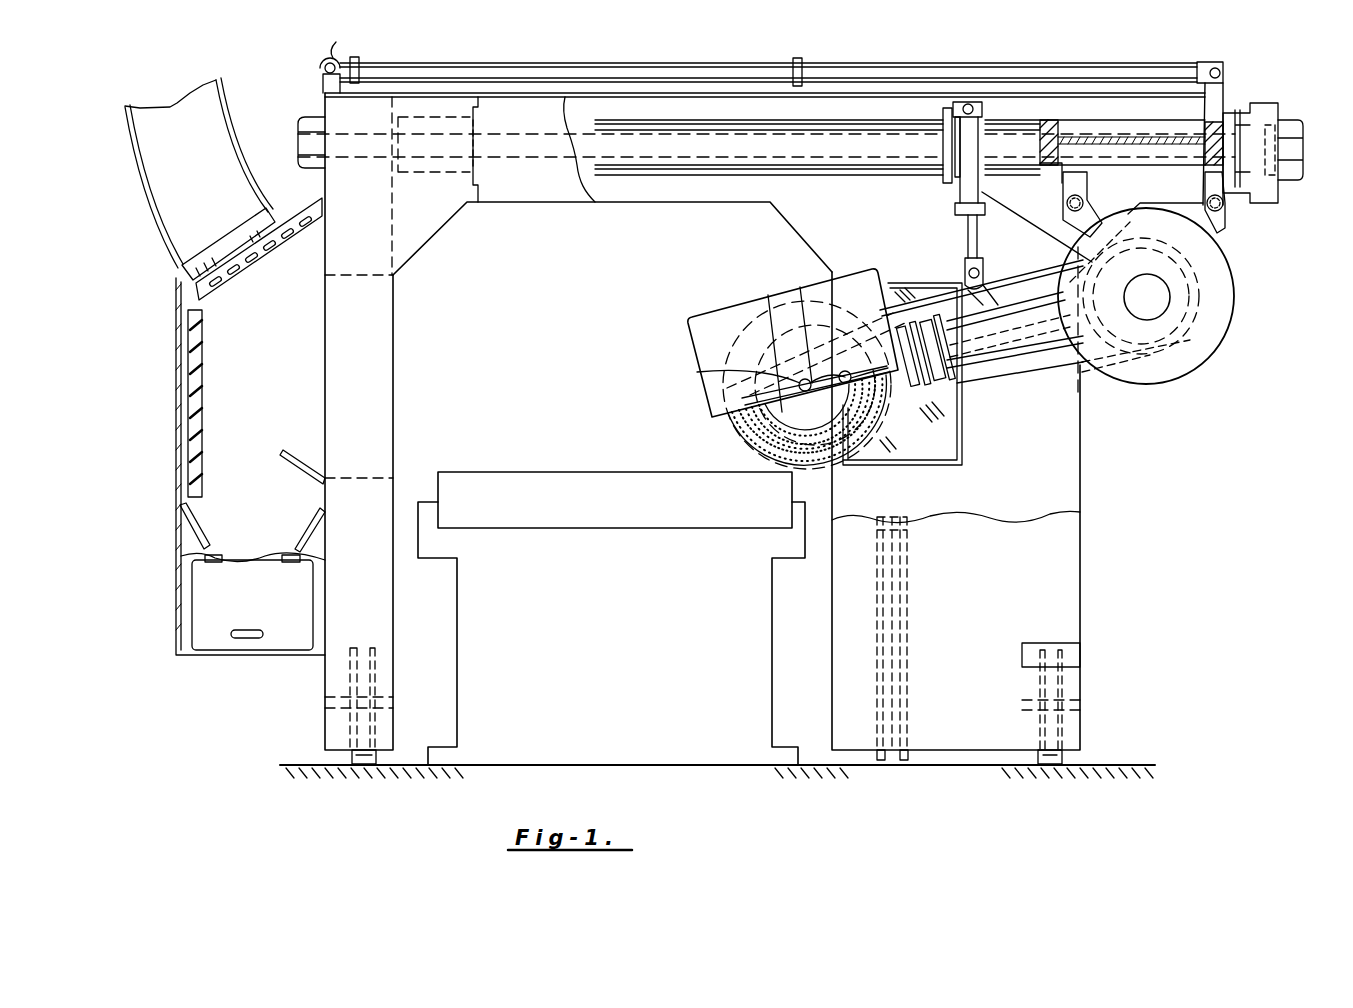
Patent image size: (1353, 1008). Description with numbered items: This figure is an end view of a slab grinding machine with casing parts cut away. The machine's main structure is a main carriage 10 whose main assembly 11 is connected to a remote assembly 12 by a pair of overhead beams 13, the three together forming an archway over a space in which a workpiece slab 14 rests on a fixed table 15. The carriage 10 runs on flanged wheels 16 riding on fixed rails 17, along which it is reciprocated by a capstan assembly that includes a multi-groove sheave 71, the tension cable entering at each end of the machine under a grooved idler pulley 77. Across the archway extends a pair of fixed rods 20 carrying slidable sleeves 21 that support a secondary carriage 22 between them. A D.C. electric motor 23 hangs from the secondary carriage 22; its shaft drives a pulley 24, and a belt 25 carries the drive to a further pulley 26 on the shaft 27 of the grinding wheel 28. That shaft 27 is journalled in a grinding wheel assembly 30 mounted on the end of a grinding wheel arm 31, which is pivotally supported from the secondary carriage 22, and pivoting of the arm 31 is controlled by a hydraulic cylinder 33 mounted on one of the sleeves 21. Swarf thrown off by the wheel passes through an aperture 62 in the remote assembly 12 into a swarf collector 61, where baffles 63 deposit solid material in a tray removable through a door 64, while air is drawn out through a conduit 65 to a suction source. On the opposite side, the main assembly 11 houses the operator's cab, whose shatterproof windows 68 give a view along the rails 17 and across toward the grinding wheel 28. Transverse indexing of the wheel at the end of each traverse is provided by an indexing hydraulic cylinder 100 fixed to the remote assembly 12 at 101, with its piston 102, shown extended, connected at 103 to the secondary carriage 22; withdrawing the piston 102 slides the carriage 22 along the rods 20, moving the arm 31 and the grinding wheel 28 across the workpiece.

The main carriage 10 is at (1088, 553).
The main assembly 11 is at (1080, 443).
The remote assembly 12 is at (380, 582).
The overhead beams 13 is at (538, 198).
The workpiece slab 14 is at (566, 478).
The fixed table 15 is at (470, 638).
The flanged wheels 16 is at (350, 676).
The fixed rails 17 is at (352, 766).
The fixed rods 20 is at (607, 120).
The sleeves 21 is at (1000, 118).
The secondary carriage 22 is at (1105, 140).
The D.C. electric motor 23 is at (1212, 268).
The pulley 24 is at (1190, 344).
The belt 25 is at (1003, 276).
The further pulley 26 is at (806, 412).
The shaft 27 is at (697, 372).
The grinding wheel 28 is at (760, 452).
The grinding wheel assembly 30 is at (715, 297).
The grinding wheel arm 31 is at (1009, 336).
The hydraulic cylinder 33 is at (962, 180).
The swarf collector 61 is at (236, 318).
The aperture 62 is at (380, 280).
The baffles 63 is at (259, 256).
The door 64 is at (210, 612).
The conduit 65 is at (212, 115).
The shatterproof windows 68 is at (955, 446).
The multi-groove sheave 71 is at (910, 580).
The grooved idler pulley 77 is at (902, 738).
The indexing hydraulic cylinder 100 is at (410, 66).
The fixing point of indexing cylinder 101 is at (340, 56).
The piston 102 is at (862, 68).
The connection point of piston 103 is at (1218, 68).